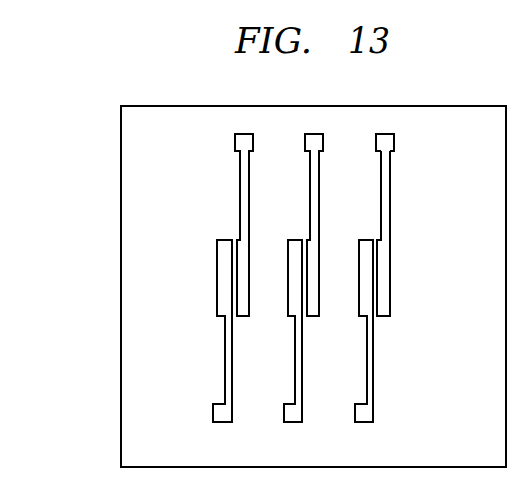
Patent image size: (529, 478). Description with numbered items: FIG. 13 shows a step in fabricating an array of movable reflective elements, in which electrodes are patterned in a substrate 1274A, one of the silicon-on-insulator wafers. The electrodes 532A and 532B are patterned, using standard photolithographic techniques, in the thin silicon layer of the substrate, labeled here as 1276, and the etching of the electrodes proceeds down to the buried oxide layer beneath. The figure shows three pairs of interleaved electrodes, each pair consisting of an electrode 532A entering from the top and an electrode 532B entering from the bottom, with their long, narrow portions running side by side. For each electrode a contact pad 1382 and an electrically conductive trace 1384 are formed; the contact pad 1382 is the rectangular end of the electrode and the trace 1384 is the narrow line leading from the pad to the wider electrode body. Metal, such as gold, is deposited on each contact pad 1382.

The substrate 1274A is at (121, 199).
The electrode region 1276 is at (192, 143).
The electrode 532A is at (310, 316).
The electrode 532B is at (295, 242).
The contact pad 1382 is at (394, 148).
The electrically conductive trace 1384 is at (390, 212).